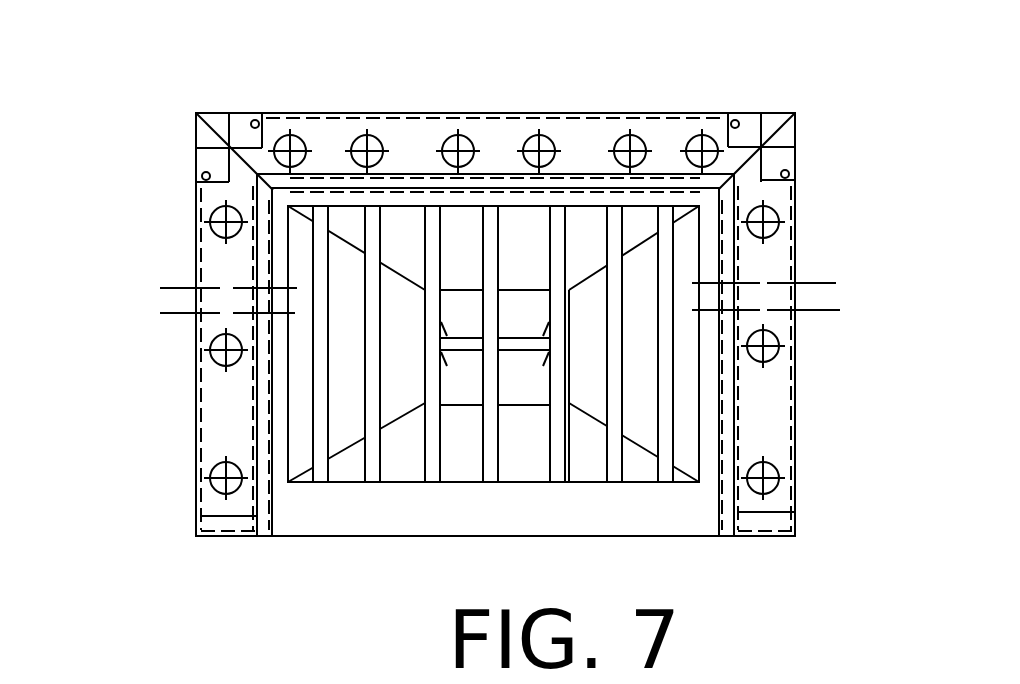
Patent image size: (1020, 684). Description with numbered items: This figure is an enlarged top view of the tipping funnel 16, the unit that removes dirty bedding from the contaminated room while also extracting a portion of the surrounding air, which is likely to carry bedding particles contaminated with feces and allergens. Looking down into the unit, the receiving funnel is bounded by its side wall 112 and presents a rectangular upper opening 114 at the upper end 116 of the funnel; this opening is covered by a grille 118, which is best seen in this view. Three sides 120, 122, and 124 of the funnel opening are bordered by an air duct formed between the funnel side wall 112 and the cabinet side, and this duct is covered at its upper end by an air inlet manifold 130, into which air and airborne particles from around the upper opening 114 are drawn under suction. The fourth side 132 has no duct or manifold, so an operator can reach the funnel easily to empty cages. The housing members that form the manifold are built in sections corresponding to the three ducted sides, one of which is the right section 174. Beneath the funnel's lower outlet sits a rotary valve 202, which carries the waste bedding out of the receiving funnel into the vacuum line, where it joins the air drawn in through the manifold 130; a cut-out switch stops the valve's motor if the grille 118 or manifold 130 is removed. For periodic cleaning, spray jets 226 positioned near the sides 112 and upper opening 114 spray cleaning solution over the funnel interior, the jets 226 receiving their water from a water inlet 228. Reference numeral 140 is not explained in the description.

The tipping funnel 16 is at (268, 83).
The side wall 112 is at (300, 408).
The upper opening 114 is at (642, 215).
The upper end 116 is at (350, 467).
The grille 118 is at (555, 215).
The side of funnel opening 120 is at (288, 275).
The side of funnel opening 122 is at (472, 205).
The side of funnel opening 124 is at (702, 368).
The air inlet manifold 130 is at (770, 433).
The fourth side 132 is at (640, 514).
The bolt 140 is at (212, 348).
The right section 174 is at (791, 270).
The rotary valve 202 is at (471, 316).
The spray jets 226 is at (298, 312).
The water inlet 228 is at (160, 288).